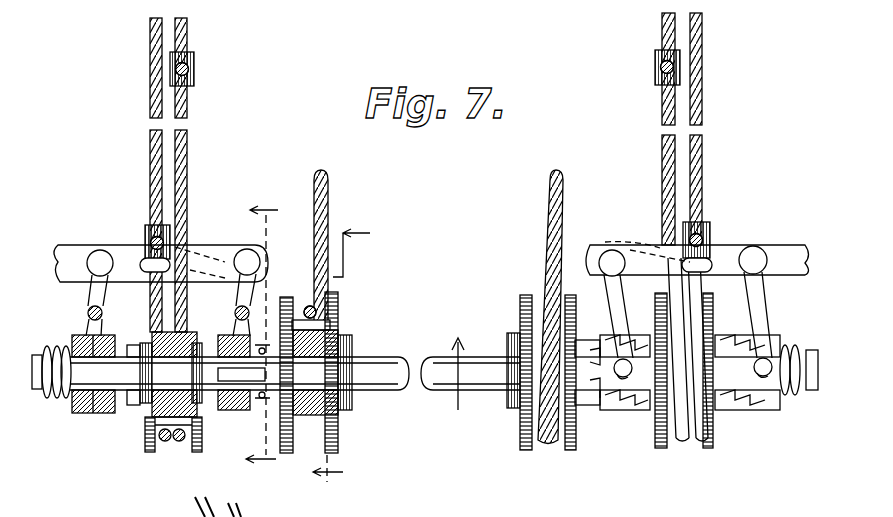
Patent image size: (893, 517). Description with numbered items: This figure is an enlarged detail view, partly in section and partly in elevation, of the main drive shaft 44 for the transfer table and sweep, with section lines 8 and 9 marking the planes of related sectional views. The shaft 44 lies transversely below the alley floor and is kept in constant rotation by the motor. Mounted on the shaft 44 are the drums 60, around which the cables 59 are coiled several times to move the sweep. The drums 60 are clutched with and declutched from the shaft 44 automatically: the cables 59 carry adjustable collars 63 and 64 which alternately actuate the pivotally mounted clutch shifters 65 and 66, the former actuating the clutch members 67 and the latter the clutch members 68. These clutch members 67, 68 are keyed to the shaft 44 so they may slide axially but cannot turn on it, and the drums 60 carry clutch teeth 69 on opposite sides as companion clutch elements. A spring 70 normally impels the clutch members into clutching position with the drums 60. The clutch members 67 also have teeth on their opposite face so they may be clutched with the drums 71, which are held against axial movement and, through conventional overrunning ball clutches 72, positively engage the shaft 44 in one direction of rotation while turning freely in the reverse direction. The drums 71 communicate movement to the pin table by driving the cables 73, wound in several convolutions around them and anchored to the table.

The main drive shaft 44 is at (440, 365).
The cables 59 is at (183, 156).
The drums 60 is at (148, 452).
The adjustable collar 63 is at (195, 75).
The adjustable collar 64 is at (145, 245).
The clutch shifter 65 is at (226, 250).
The clutch shifter 66 is at (90, 294).
The clutch members 67 is at (230, 415).
The clutch members 68 is at (106, 415).
The clutch teeth 69 is at (130, 334).
The spring 70 is at (62, 400).
The drums 71 is at (338, 318).
The overrunning ball clutches 72 is at (305, 352).
The cables 73 is at (330, 190).
The section line 8- 8 is at (262, 336).
The section line 9- 9 is at (341, 355).